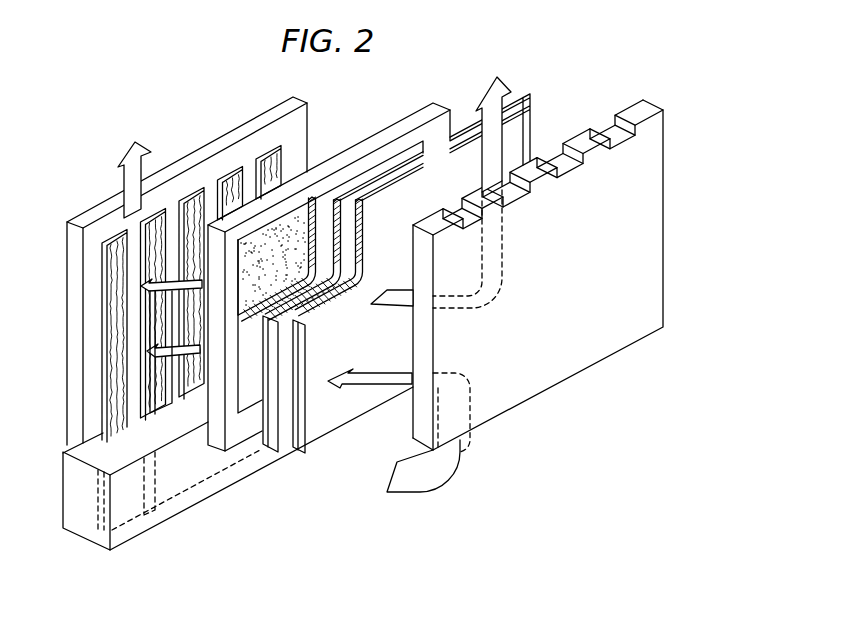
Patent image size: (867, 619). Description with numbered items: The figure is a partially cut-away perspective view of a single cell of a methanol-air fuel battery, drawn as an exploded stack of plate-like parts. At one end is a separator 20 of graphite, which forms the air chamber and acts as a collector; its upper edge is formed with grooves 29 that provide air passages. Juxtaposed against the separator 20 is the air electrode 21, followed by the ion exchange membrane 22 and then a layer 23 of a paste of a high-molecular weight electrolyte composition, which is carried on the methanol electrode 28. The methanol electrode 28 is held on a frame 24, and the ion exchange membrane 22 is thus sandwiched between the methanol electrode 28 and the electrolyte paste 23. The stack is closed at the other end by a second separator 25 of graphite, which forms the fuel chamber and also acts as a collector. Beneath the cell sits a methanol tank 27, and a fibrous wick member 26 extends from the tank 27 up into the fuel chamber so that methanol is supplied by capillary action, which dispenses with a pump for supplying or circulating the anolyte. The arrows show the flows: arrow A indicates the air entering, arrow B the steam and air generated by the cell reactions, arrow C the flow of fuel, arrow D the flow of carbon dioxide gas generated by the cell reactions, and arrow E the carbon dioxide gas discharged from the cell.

The separator 20 is at (538, 260).
The air electrode 21 is at (313, 435).
The ion exchange membrane 22 is at (273, 452).
The layer of electrolyte paste 23 is at (378, 168).
The frame 24 is at (402, 117).
The separator 25 is at (92, 208).
The fibrous wick member 26 is at (282, 165).
The methanol tank 27 is at (78, 528).
The methanol electrode 28 is at (314, 210).
The grooves 29 is at (640, 103).
The arrow A is at (410, 477).
The arrow B is at (478, 96).
The arrow C is at (150, 433).
The arrow D is at (144, 285).
The arrow E is at (128, 152).